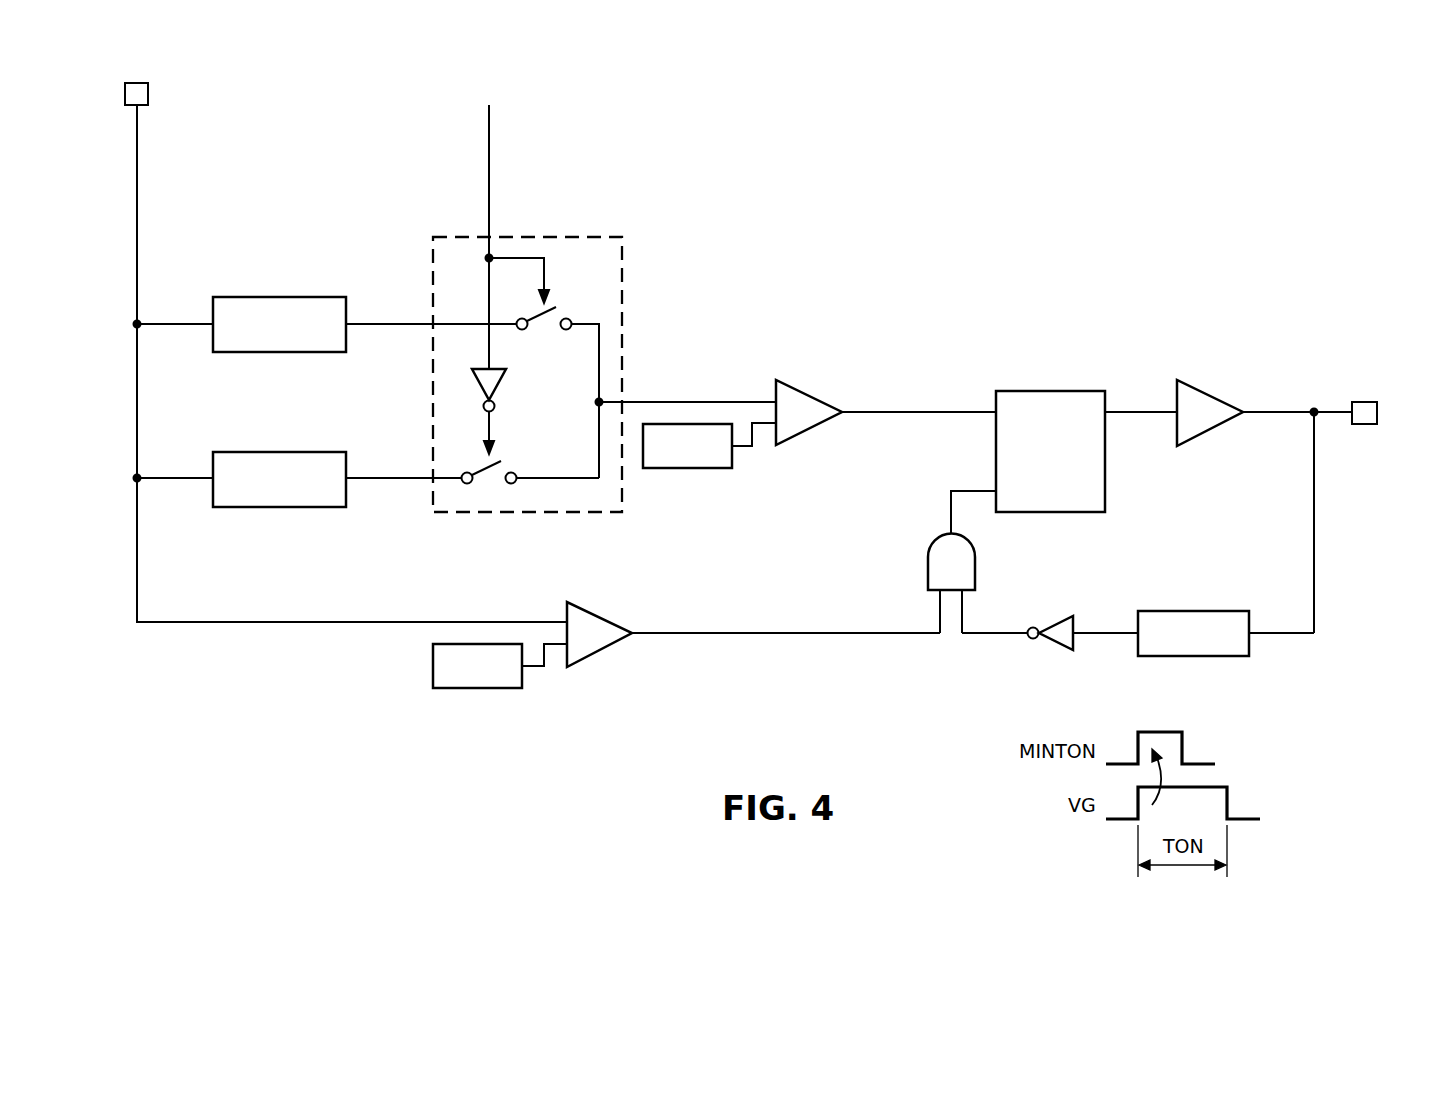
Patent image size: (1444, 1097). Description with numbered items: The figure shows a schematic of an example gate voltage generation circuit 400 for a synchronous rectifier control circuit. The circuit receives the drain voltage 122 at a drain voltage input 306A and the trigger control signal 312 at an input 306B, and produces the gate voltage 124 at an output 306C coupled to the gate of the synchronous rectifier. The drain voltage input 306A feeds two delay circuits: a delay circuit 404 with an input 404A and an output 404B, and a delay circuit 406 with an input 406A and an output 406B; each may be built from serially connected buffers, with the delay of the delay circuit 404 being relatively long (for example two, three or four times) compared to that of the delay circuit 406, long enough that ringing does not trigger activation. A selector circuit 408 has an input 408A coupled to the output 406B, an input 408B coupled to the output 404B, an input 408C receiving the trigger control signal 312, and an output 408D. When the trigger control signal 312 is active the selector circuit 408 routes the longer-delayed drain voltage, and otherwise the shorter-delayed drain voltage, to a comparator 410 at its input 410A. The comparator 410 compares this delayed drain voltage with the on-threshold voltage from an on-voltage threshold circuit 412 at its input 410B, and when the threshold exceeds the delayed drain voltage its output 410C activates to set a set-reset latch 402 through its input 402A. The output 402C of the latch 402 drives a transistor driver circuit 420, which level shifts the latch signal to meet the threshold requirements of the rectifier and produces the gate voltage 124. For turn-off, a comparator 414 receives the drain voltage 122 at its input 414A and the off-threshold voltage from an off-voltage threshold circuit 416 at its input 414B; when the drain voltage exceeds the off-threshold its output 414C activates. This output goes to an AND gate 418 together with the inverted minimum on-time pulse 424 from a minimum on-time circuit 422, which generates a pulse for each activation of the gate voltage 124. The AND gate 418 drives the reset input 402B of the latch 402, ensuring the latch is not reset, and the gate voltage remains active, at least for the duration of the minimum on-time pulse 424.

The gate voltage generation circuit 400 is at (1153, 140).
The drain voltage input 306A is at (136, 116).
The drain voltage 122 is at (136, 215).
The input 306B is at (488, 116).
The trigger control signal 312 is at (488, 184).
The input of the selector circuit 408C is at (488, 227).
The delay circuit 404 is at (281, 296).
The input of the delay circuit 404A is at (203, 324).
The output of the delay circuit 404B is at (358, 323).
The delay circuit 406 is at (281, 451).
The input of the delay circuit 406A is at (203, 478).
The output of the delay circuit 406B is at (358, 477).
The selector circuit 408 is at (493, 349).
The input of the selector circuit 408A is at (422, 482).
The input of the selector circuit 408B is at (422, 329).
The output of the selector circuit 408D is at (642, 400).
The comparator 410 is at (806, 397).
The input of the comparator 410A is at (766, 400).
The input of the comparator 410B is at (762, 428).
The output of the comparator 410C is at (850, 416).
The on-voltage threshold circuit 412 is at (688, 470).
The set-reset (SR) latch 402 is at (1050, 390).
The input of the SR latch 402A is at (981, 410).
The input of the SR latch 402B is at (987, 490).
The output of the SR latch 402C is at (1120, 410).
The transistor driver circuit 420 is at (1212, 397).
The gate voltage 124 is at (1332, 415).
The output 306C is at (1361, 401).
The comparator 414 is at (600, 617).
The input of the comparator 414A is at (558, 621).
The input of the comparator 414B is at (553, 648).
The output of the comparator 414C is at (640, 636).
The off-voltage threshold circuit 416 is at (478, 690).
The AND gate 418 is at (976, 566).
The minimum on-time pulse 424 is at (1104, 636).
The minimum on-time circuit 422 is at (1193, 657).